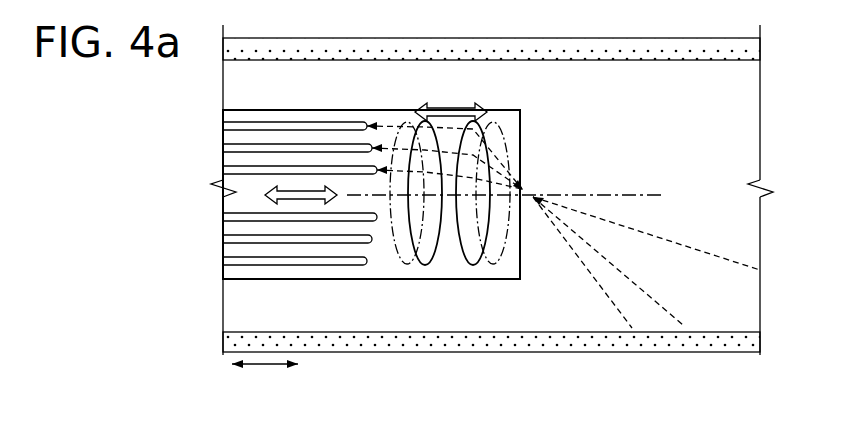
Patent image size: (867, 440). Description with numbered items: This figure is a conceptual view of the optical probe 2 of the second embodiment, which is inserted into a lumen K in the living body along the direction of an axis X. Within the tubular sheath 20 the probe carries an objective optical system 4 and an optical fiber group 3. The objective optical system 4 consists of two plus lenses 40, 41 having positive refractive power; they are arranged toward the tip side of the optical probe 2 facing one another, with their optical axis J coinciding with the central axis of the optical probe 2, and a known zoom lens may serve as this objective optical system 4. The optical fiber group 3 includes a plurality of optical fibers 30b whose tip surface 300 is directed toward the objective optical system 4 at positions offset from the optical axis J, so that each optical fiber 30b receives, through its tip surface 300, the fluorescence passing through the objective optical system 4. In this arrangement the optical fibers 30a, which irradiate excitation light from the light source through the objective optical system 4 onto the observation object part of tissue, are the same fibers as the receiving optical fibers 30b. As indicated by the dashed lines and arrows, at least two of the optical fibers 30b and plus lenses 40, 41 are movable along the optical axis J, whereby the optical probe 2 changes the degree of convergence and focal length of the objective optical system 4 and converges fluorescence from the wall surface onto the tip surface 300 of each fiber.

The optical probe 2 is at (506, 177).
The lumen K is at (730, 60).
The optical fiber group 3 is at (241, 200).
The optical fiber 30b is at (257, 196).
The optical fiber 30a is at (223, 261).
The tubular sheath 20 is at (282, 280).
The tip surface 300 is at (372, 238).
The objective optical system 4 is at (453, 269).
The plus lens 40 is at (408, 263).
The plus lens 41 is at (487, 263).
The optical axis J is at (511, 196).
The axis X is at (265, 380).